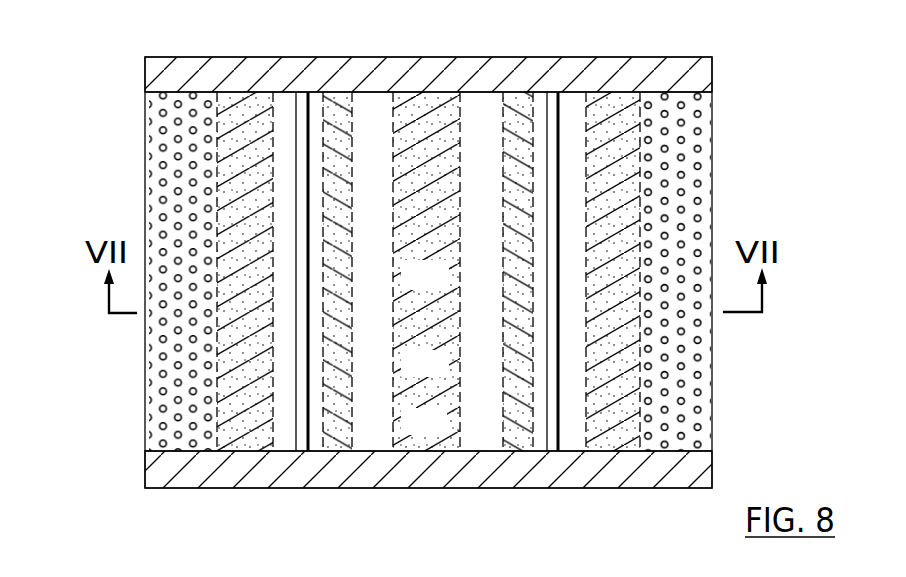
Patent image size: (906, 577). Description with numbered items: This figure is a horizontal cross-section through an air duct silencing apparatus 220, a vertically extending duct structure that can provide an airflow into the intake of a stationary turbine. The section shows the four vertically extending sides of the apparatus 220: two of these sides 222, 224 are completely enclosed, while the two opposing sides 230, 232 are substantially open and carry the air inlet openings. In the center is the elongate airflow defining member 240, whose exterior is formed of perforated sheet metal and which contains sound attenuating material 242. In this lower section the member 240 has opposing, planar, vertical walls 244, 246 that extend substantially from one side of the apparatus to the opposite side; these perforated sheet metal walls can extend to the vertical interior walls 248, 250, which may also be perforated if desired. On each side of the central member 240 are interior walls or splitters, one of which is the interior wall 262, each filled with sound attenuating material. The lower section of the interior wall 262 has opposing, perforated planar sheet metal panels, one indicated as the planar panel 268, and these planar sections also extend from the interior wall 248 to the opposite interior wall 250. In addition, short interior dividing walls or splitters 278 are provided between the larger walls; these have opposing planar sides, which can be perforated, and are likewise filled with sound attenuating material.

The silencing apparatus 220 is at (728, 180).
The enclosed side 222 is at (645, 57).
The enclosed side 224 is at (655, 490).
The opposing side 230 is at (145, 200).
The opposing side 232 is at (713, 232).
The central airflow defining member 240 is at (435, 112).
The sound attenuating material 242 is at (445, 287).
The planar vertical wall 244 is at (462, 132).
The planar vertical wall 246 is at (393, 133).
The interior wall 248 is at (673, 88).
The interior wall 250 is at (688, 453).
The interior wall 262 is at (508, 422).
The planar sheet metal panel 268 is at (503, 348).
The short interior dividing wall 278 is at (301, 95).